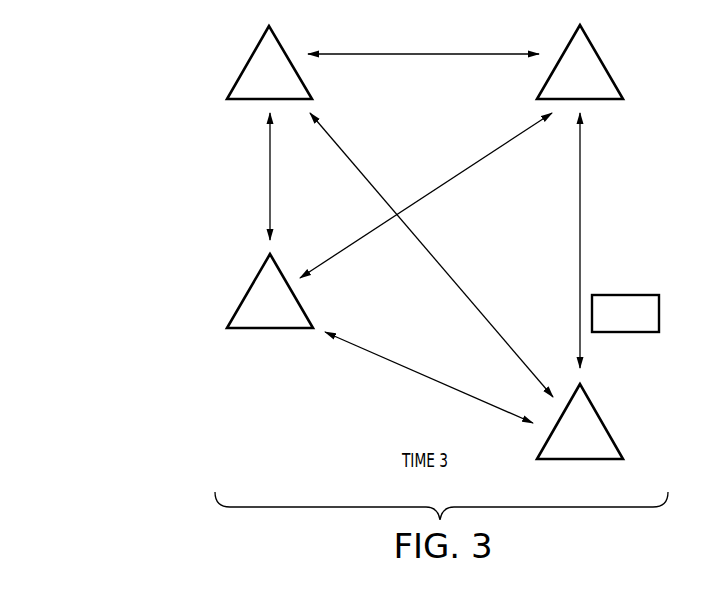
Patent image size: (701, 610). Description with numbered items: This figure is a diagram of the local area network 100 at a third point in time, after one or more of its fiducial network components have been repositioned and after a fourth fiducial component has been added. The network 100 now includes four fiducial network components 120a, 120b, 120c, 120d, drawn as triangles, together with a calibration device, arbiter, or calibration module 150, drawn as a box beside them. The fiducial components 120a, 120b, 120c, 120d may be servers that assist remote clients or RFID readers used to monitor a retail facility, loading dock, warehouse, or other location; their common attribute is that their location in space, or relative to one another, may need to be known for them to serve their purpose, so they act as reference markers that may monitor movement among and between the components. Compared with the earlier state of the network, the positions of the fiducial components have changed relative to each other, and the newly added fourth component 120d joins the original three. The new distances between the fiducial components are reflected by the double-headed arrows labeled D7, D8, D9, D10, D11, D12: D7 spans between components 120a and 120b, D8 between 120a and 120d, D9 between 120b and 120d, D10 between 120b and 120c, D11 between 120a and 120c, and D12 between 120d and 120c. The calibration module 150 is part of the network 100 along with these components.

The local area network 100 is at (150, 205).
The fiducial network component 120a is at (297, 92).
The fiducial network component 120b is at (607, 92).
The fiducial network component 120c is at (607, 452).
The fiducial network component 120d is at (297, 321).
The calibration module 150 is at (643, 322).
The distance D7 is at (423, 37).
The distance D8 is at (254, 176).
The distance D9 is at (426, 195).
The distance D10 is at (595, 240).
The distance D11 is at (431, 255).
The distance D12 is at (429, 377).